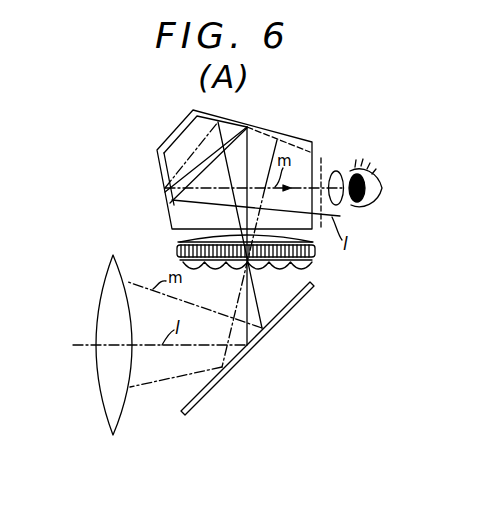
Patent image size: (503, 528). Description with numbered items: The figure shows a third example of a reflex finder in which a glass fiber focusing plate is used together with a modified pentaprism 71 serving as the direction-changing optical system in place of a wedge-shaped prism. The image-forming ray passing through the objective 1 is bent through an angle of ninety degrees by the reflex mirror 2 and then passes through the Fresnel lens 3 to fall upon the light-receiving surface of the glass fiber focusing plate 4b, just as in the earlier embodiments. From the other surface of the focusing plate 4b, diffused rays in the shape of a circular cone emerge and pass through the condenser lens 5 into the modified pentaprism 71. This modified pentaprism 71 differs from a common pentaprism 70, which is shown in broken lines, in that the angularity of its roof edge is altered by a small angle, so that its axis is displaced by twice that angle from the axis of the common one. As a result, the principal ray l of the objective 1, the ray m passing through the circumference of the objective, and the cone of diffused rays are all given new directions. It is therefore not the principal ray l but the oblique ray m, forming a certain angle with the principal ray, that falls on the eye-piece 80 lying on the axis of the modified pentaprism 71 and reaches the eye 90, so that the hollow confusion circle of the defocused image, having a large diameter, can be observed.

The objective 1 is at (112, 292).
The reflex mirror 2 is at (287, 312).
The Fresnel lens 3 is at (182, 260).
The glass fiber focusing plate 4b is at (313, 250).
The condenser lens 5 is at (170, 238).
The common pentaprism 70 is at (321, 158).
The modified pentaprism 71 is at (298, 133).
The eye-piece 80 is at (343, 203).
The eye 90 is at (375, 198).